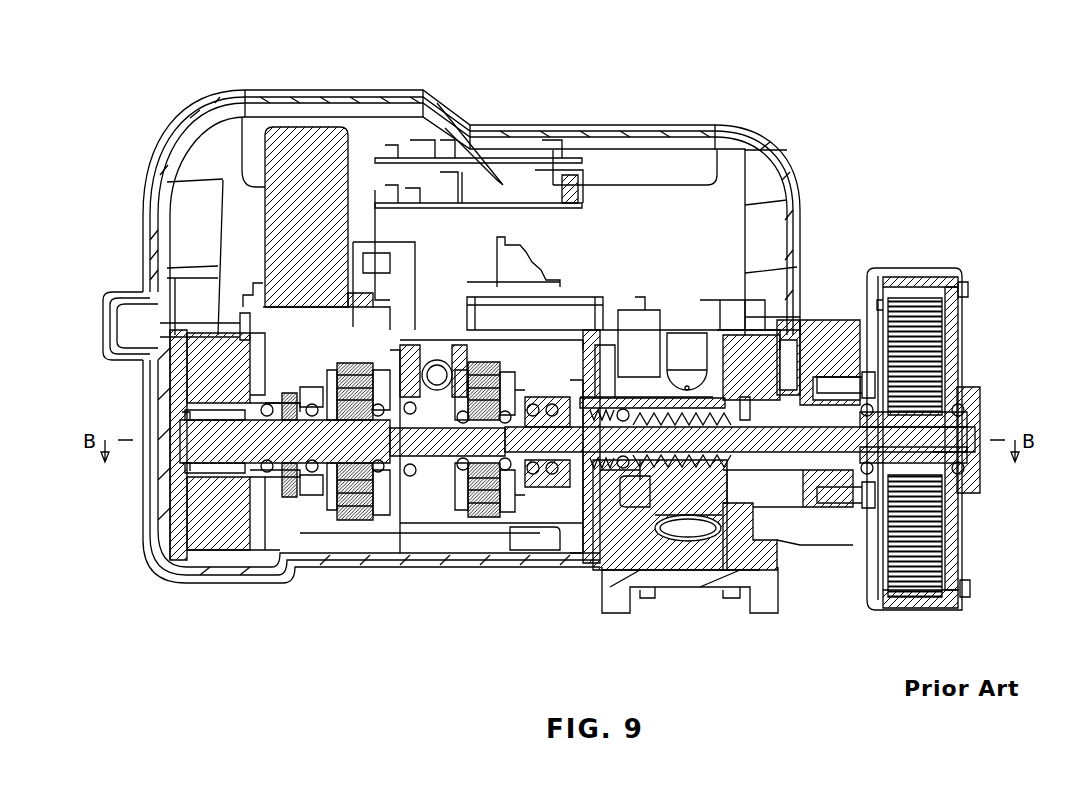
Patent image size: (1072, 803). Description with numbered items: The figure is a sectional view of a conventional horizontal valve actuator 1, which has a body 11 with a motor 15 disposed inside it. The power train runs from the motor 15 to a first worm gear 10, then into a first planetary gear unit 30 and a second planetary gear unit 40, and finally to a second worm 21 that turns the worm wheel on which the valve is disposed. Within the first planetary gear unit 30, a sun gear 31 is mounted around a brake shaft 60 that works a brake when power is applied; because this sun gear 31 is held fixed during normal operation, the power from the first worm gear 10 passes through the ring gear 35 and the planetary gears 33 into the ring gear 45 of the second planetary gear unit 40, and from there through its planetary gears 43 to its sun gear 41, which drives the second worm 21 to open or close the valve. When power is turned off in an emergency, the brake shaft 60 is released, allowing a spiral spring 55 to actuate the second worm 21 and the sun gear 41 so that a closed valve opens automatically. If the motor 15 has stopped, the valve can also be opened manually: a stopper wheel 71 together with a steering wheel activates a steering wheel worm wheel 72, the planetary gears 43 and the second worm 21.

The valve actuator 1 is at (750, 58).
The first worm gear 10 is at (305, 515).
The body 11 is at (163, 572).
The motor 15 is at (240, 165).
The second worm 21 is at (676, 460).
The first planetary gear unit 30 is at (366, 532).
The sun gear 31 is at (355, 530).
The planetary gears 33 is at (378, 522).
The ring gear 35 is at (355, 535).
The second planetary gear unit 40 is at (495, 523).
The sun gear 41 is at (478, 522).
The planetary gears 43 is at (490, 530).
The ring gear 45 is at (497, 533).
The spiral spring 55 is at (938, 342).
The brake shaft 60 is at (182, 445).
The stopper wheel 71 is at (185, 414).
The steering wheel worm wheel 72 is at (452, 370).